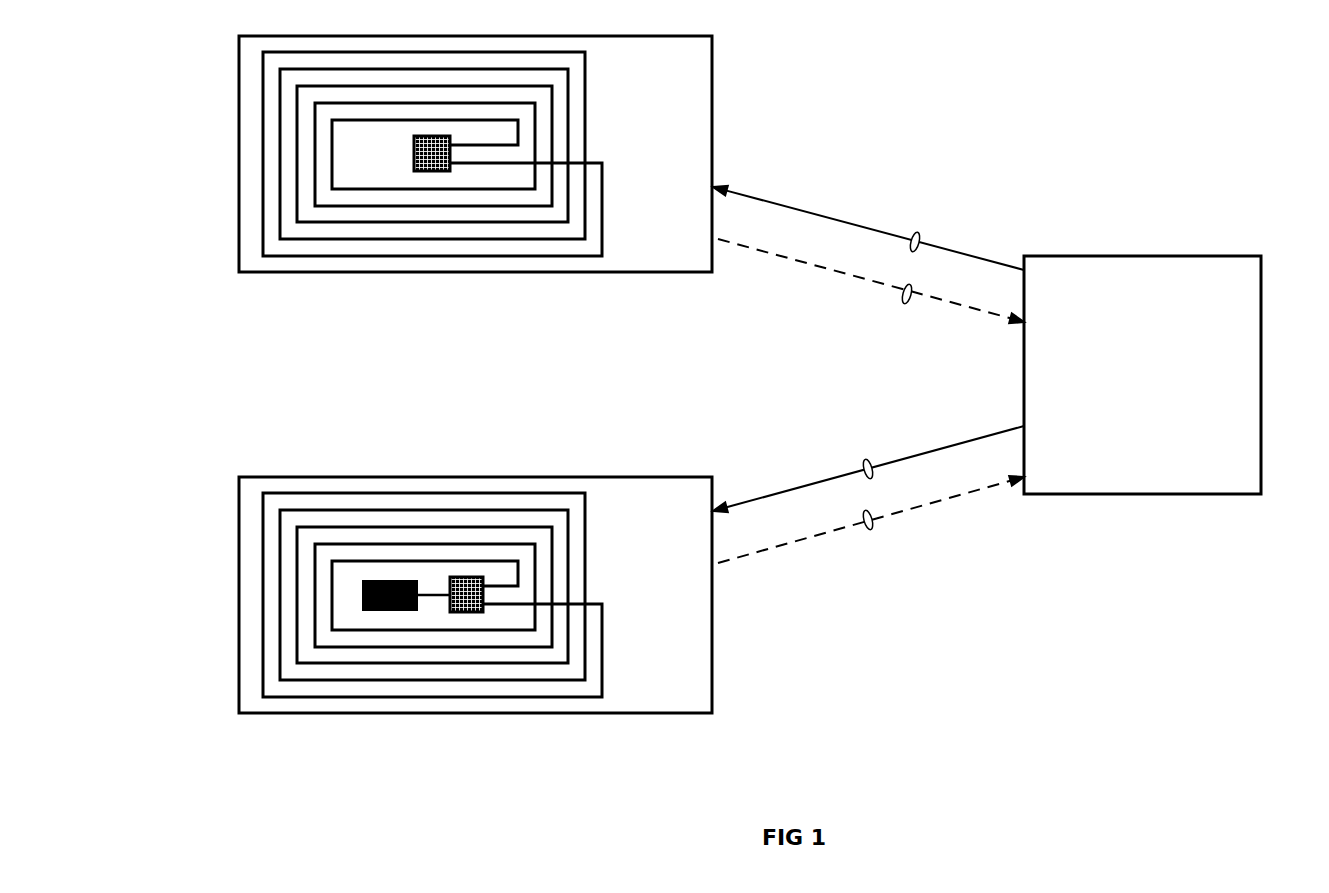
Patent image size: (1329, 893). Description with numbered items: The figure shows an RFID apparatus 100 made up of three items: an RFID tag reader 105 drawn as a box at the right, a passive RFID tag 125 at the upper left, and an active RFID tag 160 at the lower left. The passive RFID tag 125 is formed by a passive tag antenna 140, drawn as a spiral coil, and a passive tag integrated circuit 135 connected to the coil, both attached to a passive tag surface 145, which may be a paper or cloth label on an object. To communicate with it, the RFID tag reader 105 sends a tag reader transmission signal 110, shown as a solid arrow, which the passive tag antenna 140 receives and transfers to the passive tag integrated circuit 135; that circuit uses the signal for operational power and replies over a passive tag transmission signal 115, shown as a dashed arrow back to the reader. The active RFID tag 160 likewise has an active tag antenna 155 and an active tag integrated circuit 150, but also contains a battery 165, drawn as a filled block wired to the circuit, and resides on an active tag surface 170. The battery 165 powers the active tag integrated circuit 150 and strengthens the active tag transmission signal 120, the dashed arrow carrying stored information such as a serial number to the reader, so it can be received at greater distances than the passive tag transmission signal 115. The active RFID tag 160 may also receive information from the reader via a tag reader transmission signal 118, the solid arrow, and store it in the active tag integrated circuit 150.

The RFID apparatus 100 is at (1216, 92).
The RFID tag reader 105 is at (1213, 255).
The tag reader transmission signal 110 is at (918, 231).
The passive tag transmission signal 115 is at (902, 307).
The tag reader transmission signal 118 is at (865, 461).
The active tag transmission signal 120 is at (876, 531).
The passive RFID tag 125 is at (206, 72).
The passive tag integrated circuit 135 is at (437, 173).
The passive tag antenna 140 is at (533, 258).
The passive tag surface 145 is at (658, 275).
The active tag integrated circuit 150 is at (472, 612).
The active tag antenna 155 is at (533, 697).
The active RFID tag 160 is at (204, 513).
The battery 165 is at (378, 582).
The active tag surface 170 is at (657, 713).